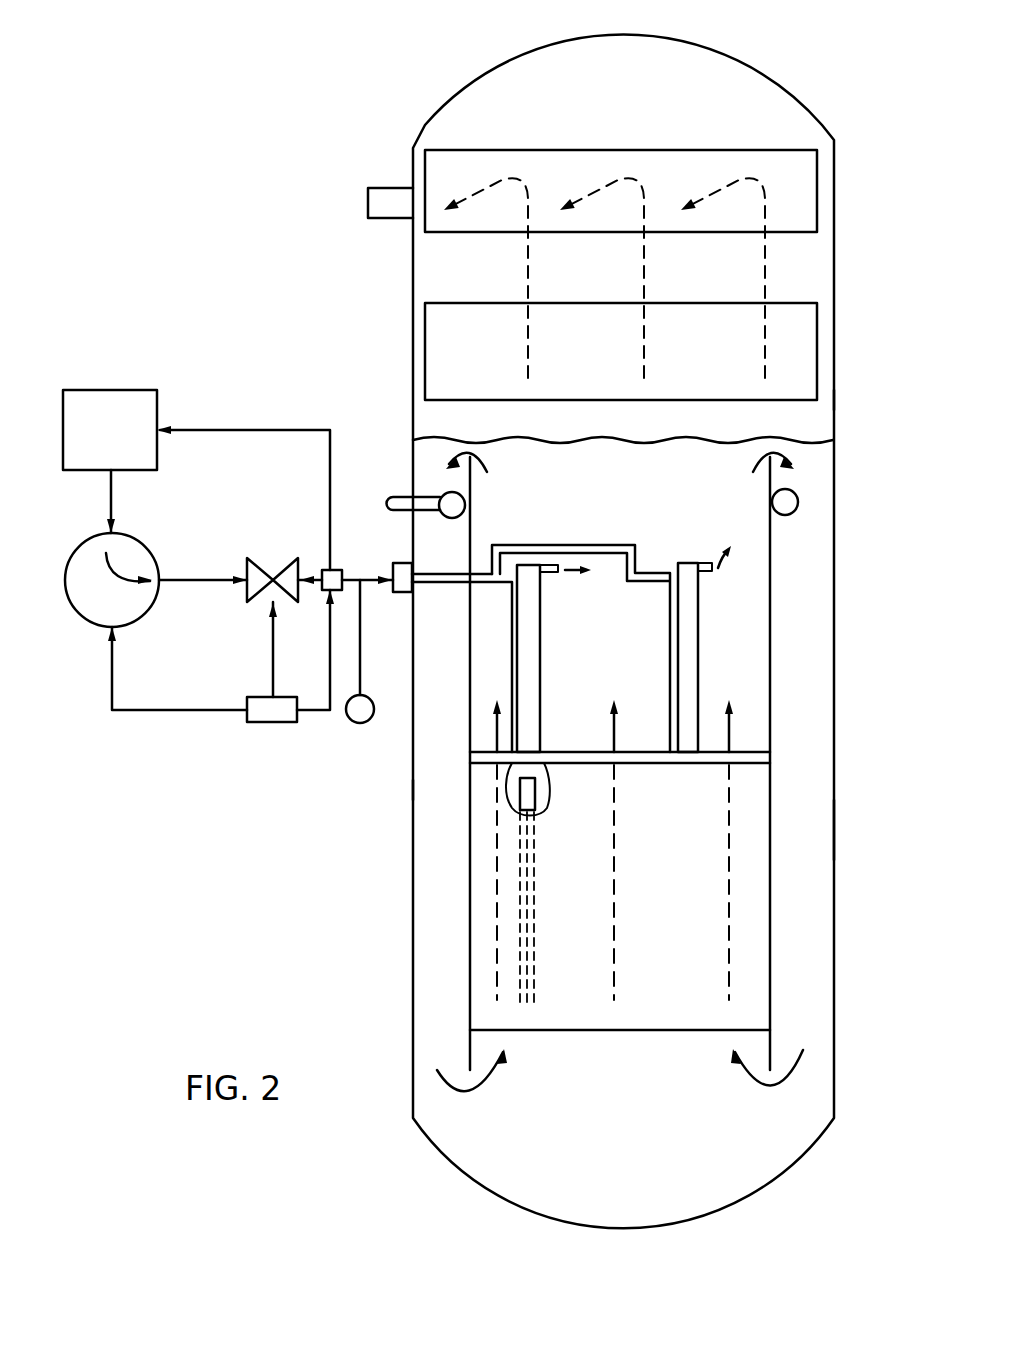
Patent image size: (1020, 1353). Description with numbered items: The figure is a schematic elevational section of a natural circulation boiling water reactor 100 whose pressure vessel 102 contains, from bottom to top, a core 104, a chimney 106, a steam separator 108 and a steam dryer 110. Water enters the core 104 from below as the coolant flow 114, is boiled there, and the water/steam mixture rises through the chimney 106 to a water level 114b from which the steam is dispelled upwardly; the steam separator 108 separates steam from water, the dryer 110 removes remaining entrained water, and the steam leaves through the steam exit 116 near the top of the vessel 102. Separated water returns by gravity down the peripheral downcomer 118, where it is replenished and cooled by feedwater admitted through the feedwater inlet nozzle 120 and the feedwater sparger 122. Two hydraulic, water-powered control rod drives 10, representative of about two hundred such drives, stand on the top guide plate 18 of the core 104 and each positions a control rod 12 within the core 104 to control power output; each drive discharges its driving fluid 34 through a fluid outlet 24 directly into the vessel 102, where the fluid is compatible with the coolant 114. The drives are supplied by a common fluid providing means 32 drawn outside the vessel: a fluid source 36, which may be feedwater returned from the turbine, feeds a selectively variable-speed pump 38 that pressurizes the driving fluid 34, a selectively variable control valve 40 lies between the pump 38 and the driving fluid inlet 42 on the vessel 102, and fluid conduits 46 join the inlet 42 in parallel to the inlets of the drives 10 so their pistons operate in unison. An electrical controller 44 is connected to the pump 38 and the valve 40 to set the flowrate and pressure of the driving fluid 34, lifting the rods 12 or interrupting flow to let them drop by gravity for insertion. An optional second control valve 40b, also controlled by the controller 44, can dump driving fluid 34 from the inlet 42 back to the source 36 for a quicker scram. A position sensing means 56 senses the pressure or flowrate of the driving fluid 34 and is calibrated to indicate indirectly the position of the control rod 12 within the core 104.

The natural circulation boiling water reactor 100 is at (786, 82).
The steam dryer 110 is at (818, 178).
The steam separator 108 is at (818, 330).
The pressure vessel 102 is at (834, 400).
The water level 114b is at (822, 434).
The feedwater sparger 122 is at (798, 500).
The chimney 106 is at (771, 560).
The core 104 is at (771, 836).
The steam exit 116 is at (385, 188).
The feedwater inlet nozzle 120 is at (405, 497).
The peripheral downcomer 118 is at (437, 787).
The coolant flow 114 is at (488, 1098).
The top guide plate 18 is at (756, 752).
The hydraulic control rod drive 10 is at (666, 656).
The control rod 12 is at (537, 803).
The fluid outlet 24 is at (548, 574).
The fluid conduits 46 is at (515, 543).
The driving fluid inlet 42 is at (403, 592).
The control valve 40 is at (273, 558).
The second control valve 40b is at (340, 570).
The fluid source 36 is at (108, 390).
The variable-speed pump 38 is at (154, 546).
The driving fluid 34 is at (118, 577).
The fluid providing means 32 is at (155, 712).
The electrical controller 44 is at (282, 722).
The position sensing means 56 is at (365, 723).